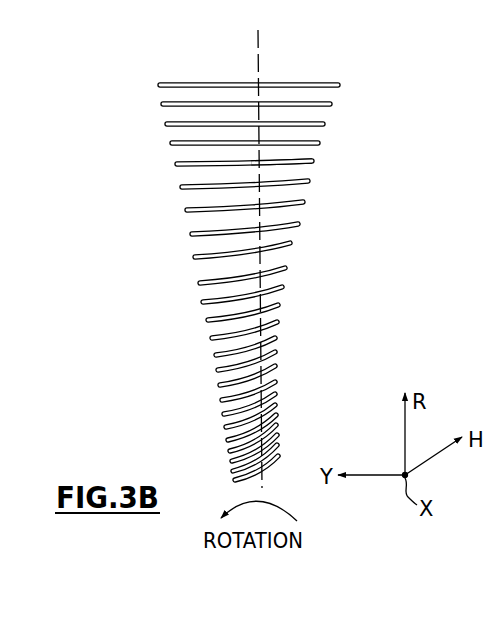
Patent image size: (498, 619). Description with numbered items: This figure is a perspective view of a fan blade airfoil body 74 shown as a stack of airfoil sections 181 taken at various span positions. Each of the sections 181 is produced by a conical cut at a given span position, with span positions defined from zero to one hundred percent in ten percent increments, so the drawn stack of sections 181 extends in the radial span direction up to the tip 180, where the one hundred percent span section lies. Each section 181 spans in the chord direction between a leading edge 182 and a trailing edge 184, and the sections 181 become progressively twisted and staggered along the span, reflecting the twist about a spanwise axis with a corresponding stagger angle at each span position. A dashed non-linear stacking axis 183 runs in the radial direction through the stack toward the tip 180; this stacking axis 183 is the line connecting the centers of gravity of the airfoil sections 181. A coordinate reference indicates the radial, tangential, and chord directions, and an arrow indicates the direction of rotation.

The spiral coil assembly 74 is at (219, 245).
The tip 180 is at (176, 83).
The sections 181 is at (307, 107).
The leading edge 182 is at (178, 165).
The non-linear stacking axis 183 is at (258, 48).
The trailing edge 184 is at (318, 160).